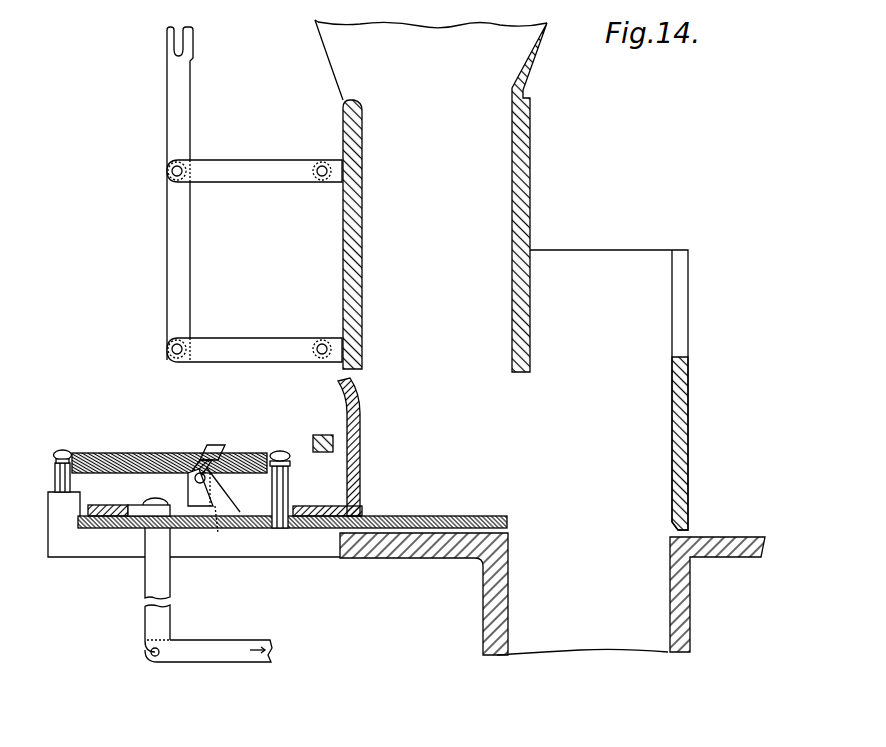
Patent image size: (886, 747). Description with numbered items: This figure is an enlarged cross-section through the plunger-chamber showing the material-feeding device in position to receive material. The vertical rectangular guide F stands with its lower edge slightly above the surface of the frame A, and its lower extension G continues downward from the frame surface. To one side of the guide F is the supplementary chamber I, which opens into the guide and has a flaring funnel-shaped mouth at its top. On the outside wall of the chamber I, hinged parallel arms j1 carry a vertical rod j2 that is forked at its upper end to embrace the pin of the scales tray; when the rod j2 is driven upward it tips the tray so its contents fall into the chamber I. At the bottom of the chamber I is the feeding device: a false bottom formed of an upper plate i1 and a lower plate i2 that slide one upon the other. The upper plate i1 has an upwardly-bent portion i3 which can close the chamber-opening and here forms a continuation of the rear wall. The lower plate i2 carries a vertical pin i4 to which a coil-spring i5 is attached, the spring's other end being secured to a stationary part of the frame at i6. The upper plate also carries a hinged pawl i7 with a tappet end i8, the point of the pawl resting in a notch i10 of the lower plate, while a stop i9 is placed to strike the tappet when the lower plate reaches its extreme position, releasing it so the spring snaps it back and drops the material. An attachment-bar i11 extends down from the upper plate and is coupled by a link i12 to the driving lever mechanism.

The supplementary chamber I is at (431, 196).
The vertical rectangular guide F is at (609, 390).
The lower extension of the guide G is at (585, 608).
The frame A is at (552, 594).
The hinged parallel arms j1 is at (254, 249).
The vertical rod j2 is at (168, 193).
The upper plate i1 is at (312, 506).
The lower plate i2 is at (418, 516).
The upwardly-bent portion i3 is at (359, 447).
The vertical pin i4 is at (280, 451).
The coil-spring i5 is at (169, 450).
The stationary attachment point of the spring i6 is at (52, 471).
The hinged pawl i7 is at (226, 486).
The tappet end i8 is at (215, 445).
The stop i9 is at (322, 435).
The notch i10 is at (219, 535).
The attachment-bar i11 is at (167, 577).
The link i12 is at (208, 649).